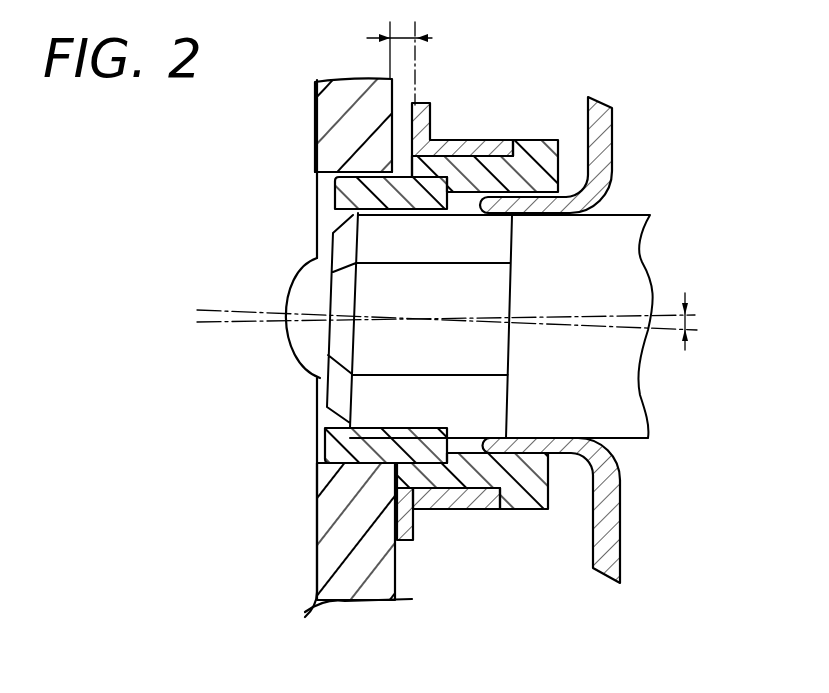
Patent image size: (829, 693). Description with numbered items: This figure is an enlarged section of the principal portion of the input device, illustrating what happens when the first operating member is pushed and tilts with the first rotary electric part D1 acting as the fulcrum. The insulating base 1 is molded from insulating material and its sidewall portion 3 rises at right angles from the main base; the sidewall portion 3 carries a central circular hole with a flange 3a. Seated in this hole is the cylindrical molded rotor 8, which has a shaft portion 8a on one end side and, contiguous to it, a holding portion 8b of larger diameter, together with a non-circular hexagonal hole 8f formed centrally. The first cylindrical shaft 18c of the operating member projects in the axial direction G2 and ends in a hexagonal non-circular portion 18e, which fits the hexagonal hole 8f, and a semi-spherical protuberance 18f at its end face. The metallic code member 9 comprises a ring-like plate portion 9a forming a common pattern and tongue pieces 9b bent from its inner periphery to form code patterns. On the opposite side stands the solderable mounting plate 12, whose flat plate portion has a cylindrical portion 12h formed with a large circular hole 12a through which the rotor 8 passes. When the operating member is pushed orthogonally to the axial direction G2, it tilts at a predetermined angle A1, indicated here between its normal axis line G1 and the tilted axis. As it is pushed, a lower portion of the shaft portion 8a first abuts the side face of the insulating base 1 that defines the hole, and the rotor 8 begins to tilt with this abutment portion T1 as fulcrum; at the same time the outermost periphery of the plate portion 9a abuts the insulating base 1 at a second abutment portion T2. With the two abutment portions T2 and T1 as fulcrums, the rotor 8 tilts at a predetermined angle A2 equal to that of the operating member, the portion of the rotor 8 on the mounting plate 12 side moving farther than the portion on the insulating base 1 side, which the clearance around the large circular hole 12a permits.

The insulating base 1 is at (305, 107).
The sidewall portion 3 is at (327, 126).
The flange 3a is at (323, 178).
The rotor 8 is at (523, 524).
The shaft portion 8a is at (328, 447).
The holding portion 8b is at (486, 490).
The hexagonal hole 8f is at (370, 228).
The code member 9 is at (483, 128).
The plate portion 9a is at (410, 545).
The tongue pieces 9b is at (497, 140).
The mounting plate 12 is at (618, 118).
The large circular hole 12a is at (610, 203).
The cylindrical portion 12h is at (553, 137).
The first cylindrical shaft 18c is at (627, 272).
The hexagonal non-circular portion 18e is at (366, 393).
The semi-spherical protuberance 18f is at (295, 345).
The abutment portion T1 is at (392, 470).
The abutment portion T2 is at (400, 538).
The predetermined angle A1 is at (705, 321).
The predetermined angle A2 is at (399, 52).
The first rotary electric part D1 is at (325, 68).
The axis line G1 is at (693, 312).
The axial direction G2 is at (447, 320).